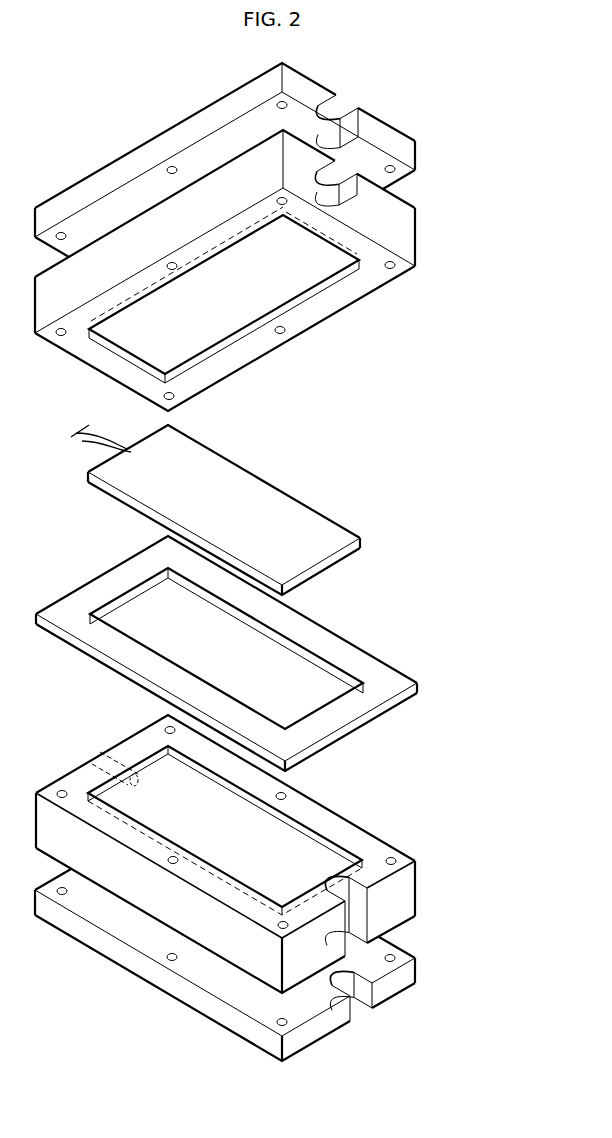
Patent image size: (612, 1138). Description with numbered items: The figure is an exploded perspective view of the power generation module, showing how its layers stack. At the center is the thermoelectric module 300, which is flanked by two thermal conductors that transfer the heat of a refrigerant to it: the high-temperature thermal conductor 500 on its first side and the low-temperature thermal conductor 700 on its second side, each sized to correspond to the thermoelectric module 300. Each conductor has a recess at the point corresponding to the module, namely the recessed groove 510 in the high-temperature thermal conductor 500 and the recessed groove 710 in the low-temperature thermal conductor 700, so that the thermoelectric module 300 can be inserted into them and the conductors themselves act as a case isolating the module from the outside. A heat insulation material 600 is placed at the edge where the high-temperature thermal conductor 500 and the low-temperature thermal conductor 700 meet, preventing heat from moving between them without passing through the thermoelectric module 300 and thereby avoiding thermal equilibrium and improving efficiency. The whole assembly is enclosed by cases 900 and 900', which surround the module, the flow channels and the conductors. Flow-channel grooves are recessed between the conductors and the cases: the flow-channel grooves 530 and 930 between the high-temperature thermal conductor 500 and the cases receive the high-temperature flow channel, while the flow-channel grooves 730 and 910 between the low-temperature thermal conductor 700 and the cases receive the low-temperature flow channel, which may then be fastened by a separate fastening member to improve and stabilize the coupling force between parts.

The thermoelectric module 300 is at (352, 544).
The high-temperature thermal conductor 500 is at (402, 892).
The recessed groove 510 is at (317, 853).
The flow-channel groove 530 is at (395, 951).
The heat insulation material 600 is at (378, 672).
The low-temperature thermal conductor 700 is at (405, 240).
The recessed groove 710 is at (300, 272).
The flow-channel groove 730 is at (395, 183).
The case 900 is at (264, 160).
The case 900' is at (267, 965).
The flow-channel groove 910 is at (348, 122).
The flow-channel groove 930 is at (375, 1010).